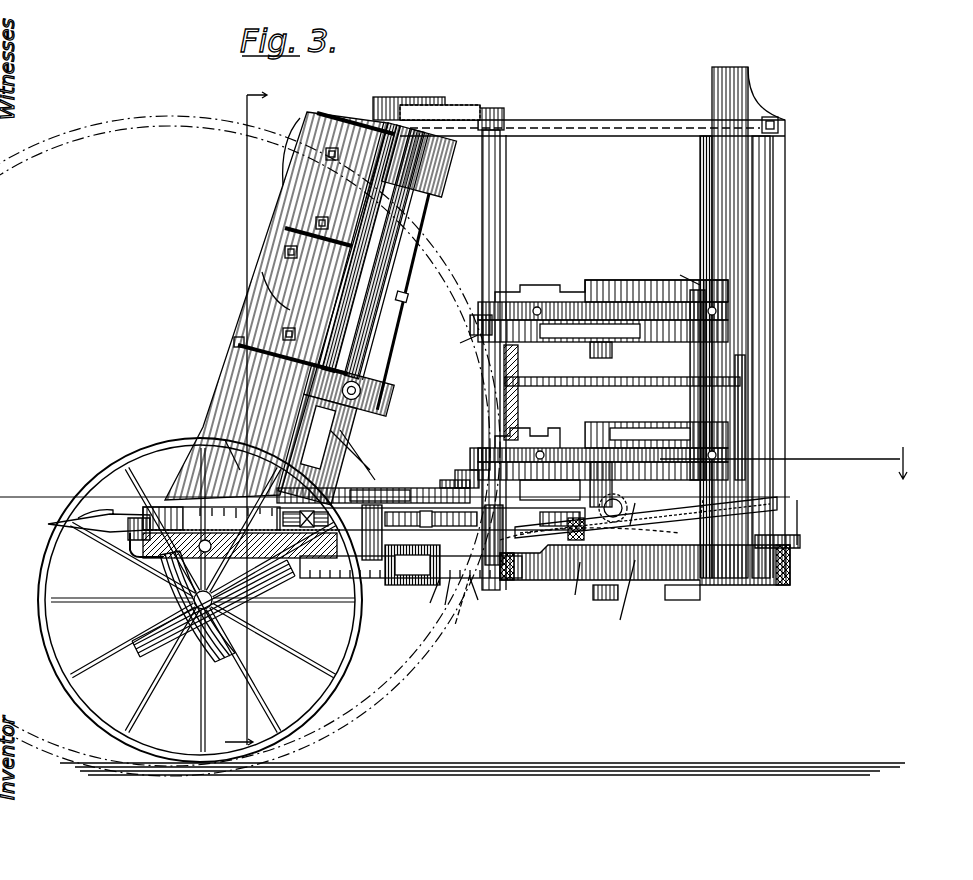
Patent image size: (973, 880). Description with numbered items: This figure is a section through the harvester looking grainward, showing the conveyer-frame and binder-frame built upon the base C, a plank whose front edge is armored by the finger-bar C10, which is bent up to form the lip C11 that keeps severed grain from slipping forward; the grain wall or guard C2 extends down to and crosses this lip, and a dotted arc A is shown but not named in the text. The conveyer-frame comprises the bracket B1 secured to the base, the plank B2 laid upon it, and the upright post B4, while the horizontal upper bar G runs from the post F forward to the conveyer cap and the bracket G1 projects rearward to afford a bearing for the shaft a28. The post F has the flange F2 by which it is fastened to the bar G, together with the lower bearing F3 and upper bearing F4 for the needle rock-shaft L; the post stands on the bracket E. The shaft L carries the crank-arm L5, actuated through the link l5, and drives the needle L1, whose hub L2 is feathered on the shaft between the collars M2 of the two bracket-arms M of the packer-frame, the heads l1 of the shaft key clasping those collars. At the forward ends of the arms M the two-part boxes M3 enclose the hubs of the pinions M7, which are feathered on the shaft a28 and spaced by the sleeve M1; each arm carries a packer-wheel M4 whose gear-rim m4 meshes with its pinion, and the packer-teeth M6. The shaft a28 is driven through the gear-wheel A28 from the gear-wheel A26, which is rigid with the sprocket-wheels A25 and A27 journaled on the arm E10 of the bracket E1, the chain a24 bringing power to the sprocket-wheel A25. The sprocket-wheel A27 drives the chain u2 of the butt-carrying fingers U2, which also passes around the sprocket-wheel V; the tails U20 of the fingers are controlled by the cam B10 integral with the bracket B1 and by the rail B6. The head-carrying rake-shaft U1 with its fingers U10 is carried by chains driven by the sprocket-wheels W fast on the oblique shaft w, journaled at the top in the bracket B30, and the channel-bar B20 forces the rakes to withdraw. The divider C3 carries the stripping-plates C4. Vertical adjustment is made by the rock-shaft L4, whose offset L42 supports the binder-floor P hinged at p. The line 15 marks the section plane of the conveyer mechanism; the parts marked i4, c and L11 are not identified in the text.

The section line 15 is at (246, 418).
The path arc A is at (60, 148).
The finger-bar C10 is at (140, 580).
The base C is at (223, 606).
The lip C11 is at (128, 518).
The butt-carrying fingers U2 is at (170, 506).
The drive-chain u2 is at (241, 561).
The grain wall or guard C2 is at (431, 535).
The sprocket-wheel V is at (440, 488).
The sprocket-wheel A27 is at (394, 478).
The tail U20 is at (478, 458).
The bracket E1 is at (410, 578).
The gear-wheel A26 is at (418, 601).
The sprocket-wheel A25 is at (438, 604).
The chain a24 is at (476, 597).
The arm E10 is at (467, 609).
The upright metal post B4 is at (310, 445).
The cam B10 is at (238, 455).
The bracket B30 is at (435, 165).
The shaft w is at (373, 251).
The rail B6 is at (401, 301).
The channel-bar B20 is at (349, 389).
The plank B2 is at (317, 449).
The bracket B1 is at (405, 435).
The stripping-plates C4 is at (370, 190).
The fingers U10 is at (277, 218).
The head-carrying rake-shaft U1 is at (290, 300).
The divider C3 is at (291, 369).
The sprocket-wheels W is at (500, 182).
The upper bar G is at (590, 132).
The bracket G1 is at (450, 118).
The upper bearing F4 is at (712, 92).
The post F is at (786, 190).
The flange F2 is at (778, 112).
The needle rock-shaft L is at (700, 172).
The hub L2 is at (745, 360).
The lower bearing F3 is at (790, 468).
The hubs or collars M2 is at (745, 311).
The packer-teeth M6 is at (515, 290).
The heads l1 is at (684, 273).
The sleeve M1 is at (515, 355).
The needle L1 is at (650, 386).
The packer-wheel M4 is at (615, 440).
The bracket-arms M is at (580, 462).
The pinion M7 is at (470, 320).
The two-part box M3 is at (453, 344).
The shaft a28 is at (504, 410).
The gear-wheel A28 is at (555, 470).
The rock-shaft L4 is at (598, 505).
The binder-floor P is at (670, 515).
The gear-rim m4 is at (631, 505).
The pin i4 is at (699, 500).
The bracket c is at (765, 521).
The hinge p is at (590, 526).
The bracket E is at (790, 575).
The crank-arm L5 is at (690, 600).
The link l5 is at (640, 580).
The offset portion L42 is at (570, 586).
The bar L11 is at (629, 598).